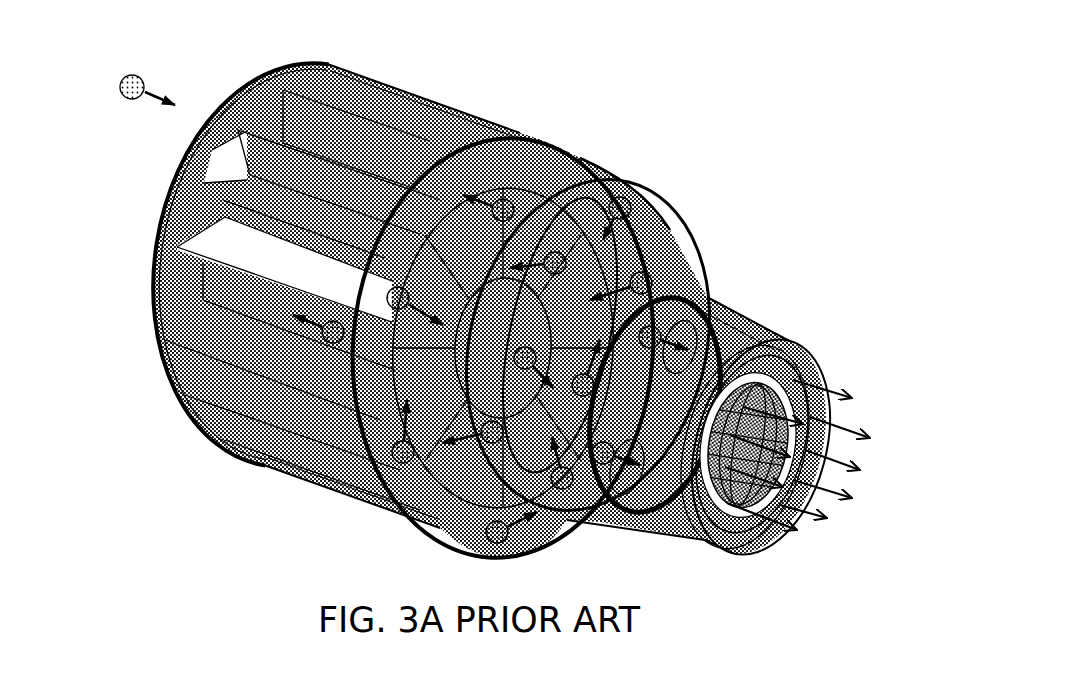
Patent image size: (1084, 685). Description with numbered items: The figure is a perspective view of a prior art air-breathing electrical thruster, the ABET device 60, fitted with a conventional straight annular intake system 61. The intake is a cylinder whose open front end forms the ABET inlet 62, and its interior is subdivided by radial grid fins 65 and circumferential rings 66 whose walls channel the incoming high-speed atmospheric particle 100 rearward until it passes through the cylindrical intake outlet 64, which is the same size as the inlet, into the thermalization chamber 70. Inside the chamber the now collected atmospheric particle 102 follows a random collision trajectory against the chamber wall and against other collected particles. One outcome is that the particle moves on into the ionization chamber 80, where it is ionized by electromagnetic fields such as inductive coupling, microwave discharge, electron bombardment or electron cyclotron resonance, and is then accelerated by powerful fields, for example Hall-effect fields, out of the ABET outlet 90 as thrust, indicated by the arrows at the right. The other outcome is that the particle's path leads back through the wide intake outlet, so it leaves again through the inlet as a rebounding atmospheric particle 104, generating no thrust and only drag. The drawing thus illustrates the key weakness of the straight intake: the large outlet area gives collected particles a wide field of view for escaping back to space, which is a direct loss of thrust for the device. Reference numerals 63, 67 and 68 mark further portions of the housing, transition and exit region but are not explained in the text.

The ABET device 60 is at (910, 55).
The straight annular intake system 61 is at (323, 268).
The ABET inlet 62 is at (177, 228).
The housing top wall 63 is at (395, 90).
The cylindrical intake outlet 64 is at (357, 493).
The radial grid fins 65 is at (505, 135).
The circumferential rings 66 is at (630, 163).
The conical section 67 is at (710, 300).
The neutralizer ring 68 is at (655, 405).
The thermalization chamber 70 is at (680, 230).
The ionization chamber 80 is at (767, 323).
The ABET outlet 90 is at (827, 347).
The high-speed atmospheric particle 100 is at (123, 78).
The collected atmospheric particle 102 is at (653, 190).
The rebounding atmospheric particle 104 is at (243, 448).